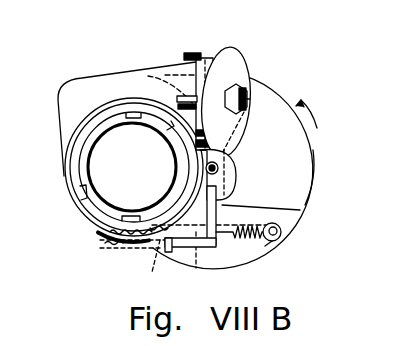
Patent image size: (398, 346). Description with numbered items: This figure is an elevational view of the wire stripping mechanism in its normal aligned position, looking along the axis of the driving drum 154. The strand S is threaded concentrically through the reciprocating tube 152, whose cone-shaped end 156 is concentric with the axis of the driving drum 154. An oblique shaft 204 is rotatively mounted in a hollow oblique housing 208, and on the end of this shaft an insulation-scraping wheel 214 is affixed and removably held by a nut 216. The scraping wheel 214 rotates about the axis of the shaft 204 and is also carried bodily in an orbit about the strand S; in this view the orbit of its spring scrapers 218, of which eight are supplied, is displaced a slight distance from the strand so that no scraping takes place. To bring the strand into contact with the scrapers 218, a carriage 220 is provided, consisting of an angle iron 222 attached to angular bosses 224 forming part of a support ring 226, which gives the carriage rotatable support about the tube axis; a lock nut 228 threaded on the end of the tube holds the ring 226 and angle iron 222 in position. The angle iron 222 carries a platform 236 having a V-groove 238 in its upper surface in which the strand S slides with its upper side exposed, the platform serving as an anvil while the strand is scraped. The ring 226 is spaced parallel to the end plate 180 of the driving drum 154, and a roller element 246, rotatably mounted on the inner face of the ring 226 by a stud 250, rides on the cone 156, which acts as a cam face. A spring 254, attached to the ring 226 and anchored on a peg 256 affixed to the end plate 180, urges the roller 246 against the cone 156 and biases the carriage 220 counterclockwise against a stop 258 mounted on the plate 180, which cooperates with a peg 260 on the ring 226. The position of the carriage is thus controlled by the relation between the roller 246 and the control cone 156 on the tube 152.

The hollow oblique housing 208 is at (125, 78).
The spring scraper 218 is at (204, 56).
The stop 258 is at (203, 62).
The insulation-scraping wheel 214 is at (230, 62).
The nut 216 is at (238, 86).
The oblique shaft 204 is at (249, 99).
The strand S is at (312, 144).
The driving drum 154 is at (313, 160).
The end plate 180 is at (307, 190).
The platform 236 is at (300, 210).
The peg 256 is at (282, 232).
The spring 254 is at (265, 246).
The angle iron 222 is at (214, 245).
The carriage 220 is at (217, 252).
The angular boss 224 is at (196, 234).
The stud 250 is at (158, 255).
The roller element 246 is at (158, 252).
The support ring 226 is at (112, 237).
The lock nut 228 is at (87, 198).
The peg 260 is at (244, 126).
The reciprocating tube 152 is at (234, 160).
The cone-shaped end 156 is at (224, 171).
The V-groove 238 is at (234, 190).